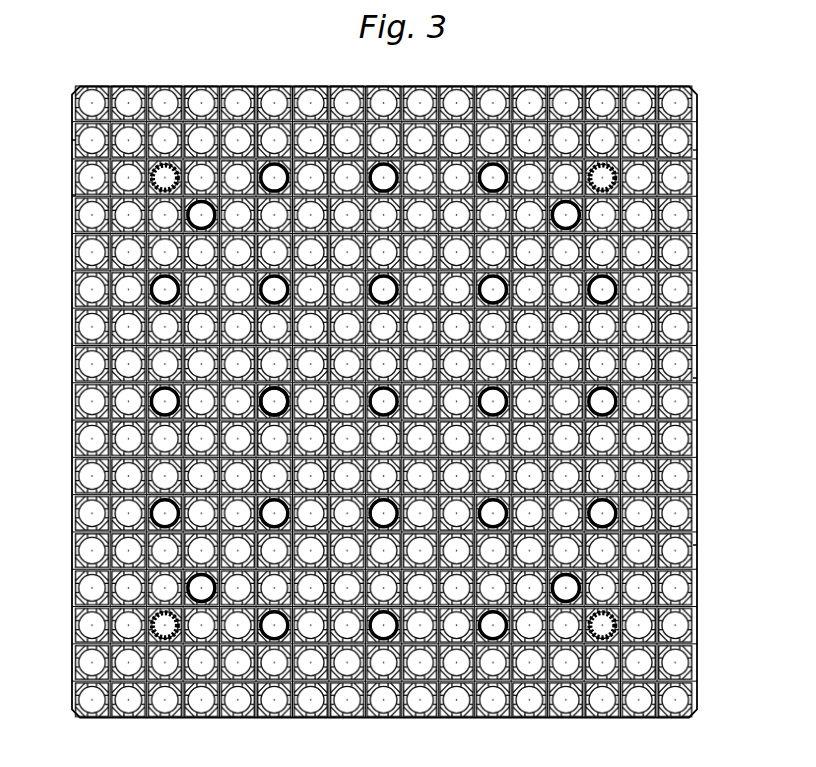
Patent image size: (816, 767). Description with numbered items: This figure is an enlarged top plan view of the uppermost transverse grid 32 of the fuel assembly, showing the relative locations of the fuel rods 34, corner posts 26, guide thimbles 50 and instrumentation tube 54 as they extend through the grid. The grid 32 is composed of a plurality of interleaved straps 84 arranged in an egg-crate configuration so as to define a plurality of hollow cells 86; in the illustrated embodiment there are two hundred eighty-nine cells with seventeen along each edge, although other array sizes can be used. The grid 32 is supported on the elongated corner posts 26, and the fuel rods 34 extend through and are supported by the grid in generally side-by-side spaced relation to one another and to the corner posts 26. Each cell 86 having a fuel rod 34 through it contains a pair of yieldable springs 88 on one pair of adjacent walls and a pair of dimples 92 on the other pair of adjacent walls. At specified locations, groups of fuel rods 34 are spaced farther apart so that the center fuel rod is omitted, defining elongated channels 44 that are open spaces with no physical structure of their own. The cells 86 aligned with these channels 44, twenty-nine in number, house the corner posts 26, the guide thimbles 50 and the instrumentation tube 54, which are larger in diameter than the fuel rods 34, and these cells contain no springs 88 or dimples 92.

The corner post 26 is at (150, 190).
The transverse grid 32 is at (699, 300).
The fuel rod 34 is at (122, 255).
The elongated channel 44 is at (147, 115).
The guide thimble 50 is at (277, 160).
The instrumentation tube 54 is at (368, 399).
The interleaved strap 84 is at (118, 400).
The hollow cell 86 is at (112, 183).
The yieldable spring 88 is at (618, 150).
The dimple 92 is at (118, 142).